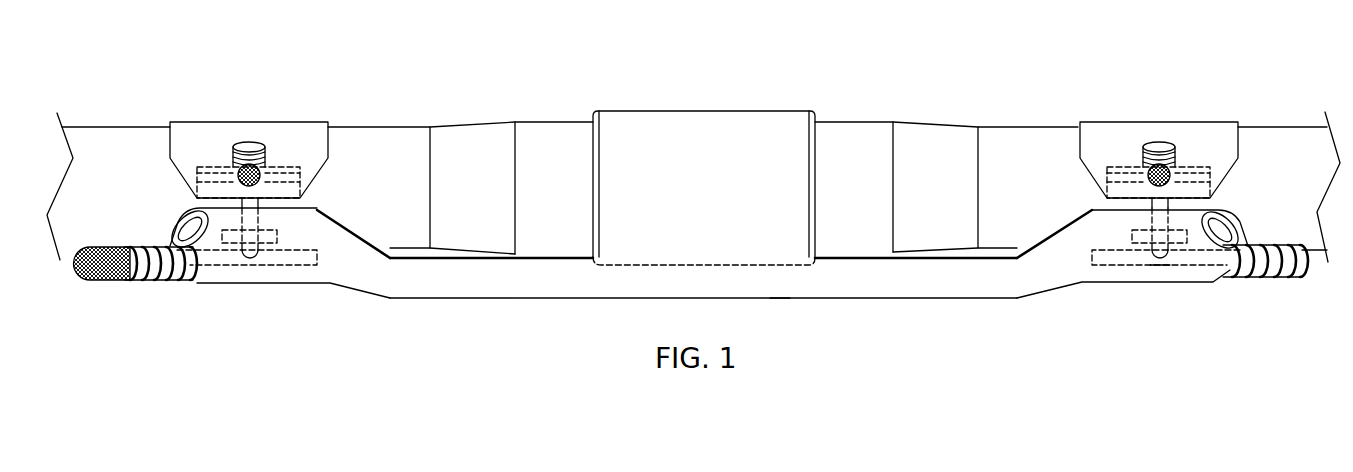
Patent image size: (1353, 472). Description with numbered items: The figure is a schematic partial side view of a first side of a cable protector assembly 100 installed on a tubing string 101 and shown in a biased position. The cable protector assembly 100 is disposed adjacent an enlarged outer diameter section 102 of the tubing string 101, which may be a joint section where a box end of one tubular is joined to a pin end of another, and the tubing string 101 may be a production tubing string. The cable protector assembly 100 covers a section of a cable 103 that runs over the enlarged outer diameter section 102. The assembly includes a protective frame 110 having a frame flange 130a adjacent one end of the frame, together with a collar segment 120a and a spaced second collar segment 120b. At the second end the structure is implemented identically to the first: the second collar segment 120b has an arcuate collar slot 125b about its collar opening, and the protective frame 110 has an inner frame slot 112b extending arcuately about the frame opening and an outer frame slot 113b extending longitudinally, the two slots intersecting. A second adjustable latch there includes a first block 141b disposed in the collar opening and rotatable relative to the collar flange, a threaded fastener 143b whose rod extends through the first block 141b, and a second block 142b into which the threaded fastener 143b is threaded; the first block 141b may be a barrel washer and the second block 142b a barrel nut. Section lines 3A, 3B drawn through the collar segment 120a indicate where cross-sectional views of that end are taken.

The cable protector assembly 100 is at (915, 308).
The tubing string 101 is at (849, 116).
The enlarged outer diameter section 102 is at (688, 155).
The cable 103 is at (140, 281).
The protective frame 110 is at (532, 278).
The inner frame slot 112b is at (777, 300).
The outer frame slot 113b is at (1128, 246).
The collar segment 120a is at (303, 131).
The second collar segment 120b is at (1213, 135).
The collar slot 125b is at (1163, 150).
The frame flange 130a is at (297, 232).
The first block 141b is at (1143, 192).
The second block 142b is at (1090, 212).
The threaded fastener 143b is at (1148, 163).
The section line 3A is at (232, 378).
The section line 3B is at (250, 345).